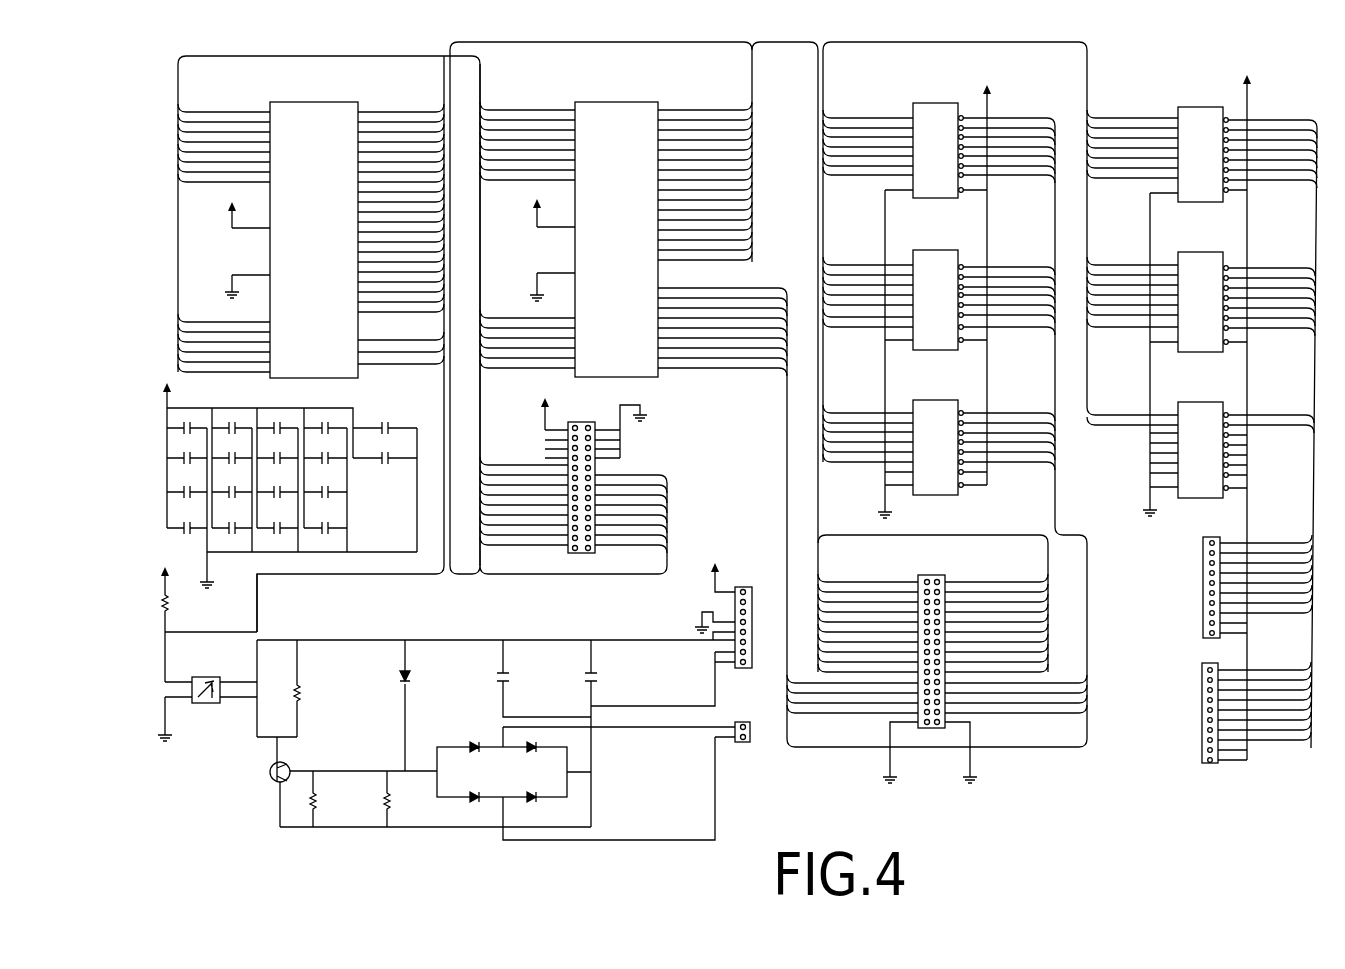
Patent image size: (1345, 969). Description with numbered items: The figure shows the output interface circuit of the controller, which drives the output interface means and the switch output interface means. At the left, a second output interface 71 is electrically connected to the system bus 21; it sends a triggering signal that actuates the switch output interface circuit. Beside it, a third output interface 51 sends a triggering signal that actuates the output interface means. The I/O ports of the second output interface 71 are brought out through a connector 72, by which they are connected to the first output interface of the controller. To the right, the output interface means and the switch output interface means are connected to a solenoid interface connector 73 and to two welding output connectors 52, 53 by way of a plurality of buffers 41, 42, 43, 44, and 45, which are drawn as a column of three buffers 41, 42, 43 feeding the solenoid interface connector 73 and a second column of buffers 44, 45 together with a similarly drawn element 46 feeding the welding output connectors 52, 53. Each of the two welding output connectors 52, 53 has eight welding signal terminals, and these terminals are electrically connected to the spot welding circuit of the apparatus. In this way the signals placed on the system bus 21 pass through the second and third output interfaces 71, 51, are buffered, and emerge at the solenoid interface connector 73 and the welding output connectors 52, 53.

The system bus 21 is at (313, 56).
The second output interface 71 is at (338, 90).
The third output interface 51 is at (641, 90).
The connector 72 is at (587, 422).
The buffer 41 is at (930, 102).
The buffer 42 is at (934, 255).
The buffer 43 is at (934, 406).
The solenoid interface connector 73 is at (938, 575).
The buffer 44 is at (1195, 112).
The buffer 45 is at (1198, 259).
The latch driver 46 is at (1200, 410).
The welding output connector 52 is at (1203, 568).
The welding output connector 53 is at (1202, 727).